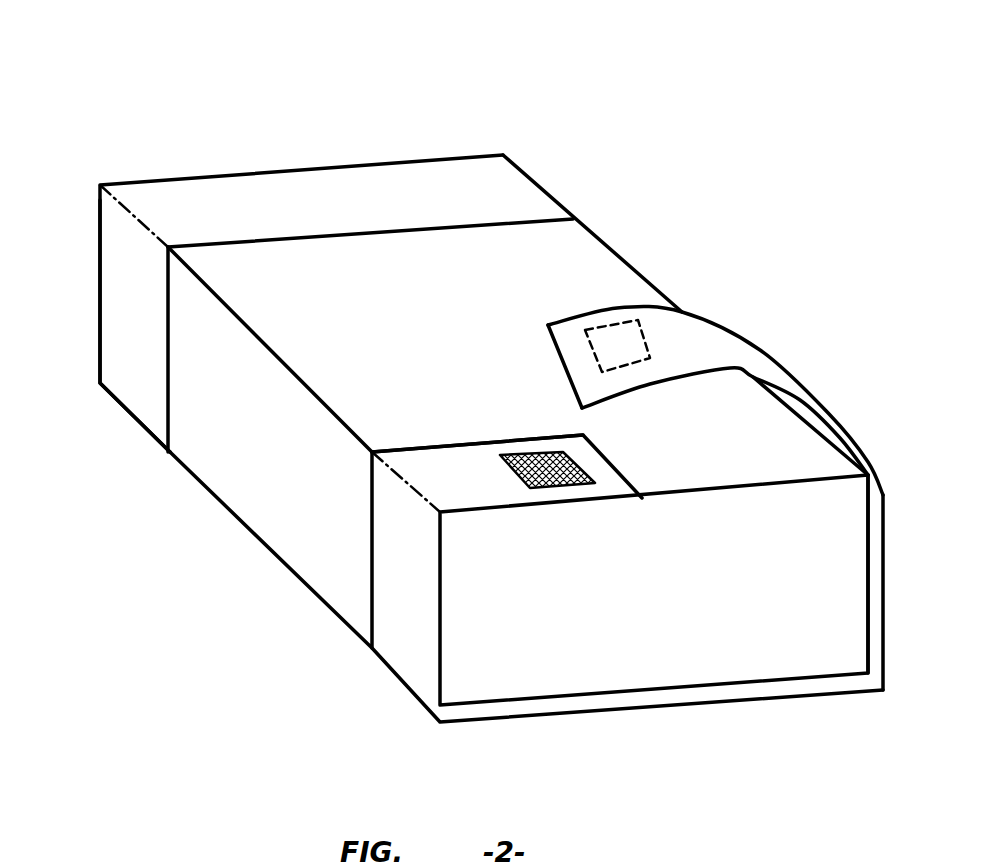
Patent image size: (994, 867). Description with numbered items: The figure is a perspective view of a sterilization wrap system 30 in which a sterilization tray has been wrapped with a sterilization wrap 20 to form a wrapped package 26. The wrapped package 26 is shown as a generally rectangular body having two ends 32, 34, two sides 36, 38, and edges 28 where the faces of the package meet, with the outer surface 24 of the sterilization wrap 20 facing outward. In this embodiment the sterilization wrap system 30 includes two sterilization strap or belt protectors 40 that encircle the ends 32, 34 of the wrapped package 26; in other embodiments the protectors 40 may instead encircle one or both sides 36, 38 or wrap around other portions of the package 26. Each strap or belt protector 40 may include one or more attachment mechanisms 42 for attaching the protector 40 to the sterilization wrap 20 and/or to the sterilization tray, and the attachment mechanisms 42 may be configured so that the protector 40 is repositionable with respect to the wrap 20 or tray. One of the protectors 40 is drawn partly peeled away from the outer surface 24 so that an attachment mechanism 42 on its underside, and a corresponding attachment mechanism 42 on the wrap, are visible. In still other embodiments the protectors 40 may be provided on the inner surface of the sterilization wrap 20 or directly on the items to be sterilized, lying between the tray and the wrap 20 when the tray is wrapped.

The sterilization wrap 20 is at (577, 247).
The outer surface 24 is at (310, 270).
The wrapped package 26 is at (840, 580).
The edge 28 is at (298, 373).
The sterilization wrap system 30 is at (229, 46).
The end 32 is at (373, 690).
The end 34 is at (123, 438).
The side 36 is at (223, 543).
The side 38 is at (668, 275).
The strap or belt protector 40 is at (450, 185).
The attachment mechanism 42 is at (575, 483).